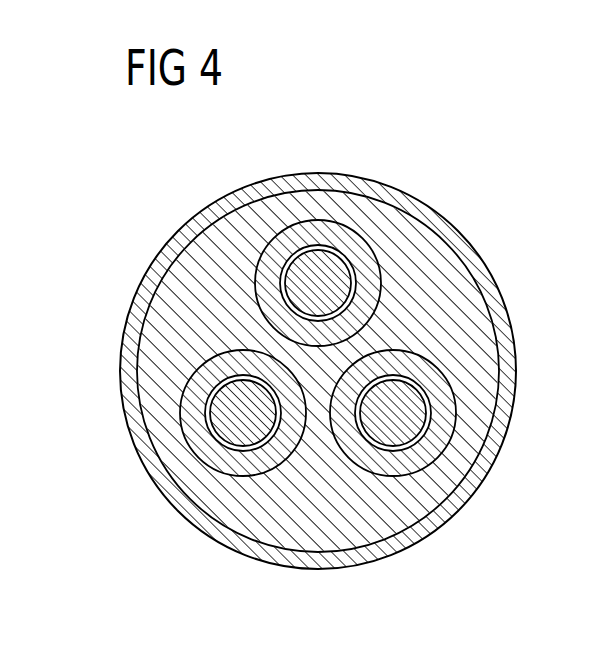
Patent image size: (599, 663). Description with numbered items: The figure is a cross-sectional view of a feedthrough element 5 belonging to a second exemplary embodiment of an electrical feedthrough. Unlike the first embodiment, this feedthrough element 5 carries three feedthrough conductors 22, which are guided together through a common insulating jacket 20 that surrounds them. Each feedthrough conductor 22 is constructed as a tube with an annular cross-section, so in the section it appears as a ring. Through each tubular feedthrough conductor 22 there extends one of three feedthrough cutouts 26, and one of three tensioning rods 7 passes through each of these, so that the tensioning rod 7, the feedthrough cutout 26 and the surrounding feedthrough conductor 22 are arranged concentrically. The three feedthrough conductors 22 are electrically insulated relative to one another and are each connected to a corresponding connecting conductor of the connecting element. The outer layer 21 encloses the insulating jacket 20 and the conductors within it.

The feedthrough element 5 is at (157, 213).
The tensioning rod 7 is at (320, 262).
The insulating jacket 20 is at (490, 283).
The outer sheath 21 is at (433, 212).
The feedthrough conductor 22 is at (290, 245).
The feedthrough cutout 26 is at (343, 258).